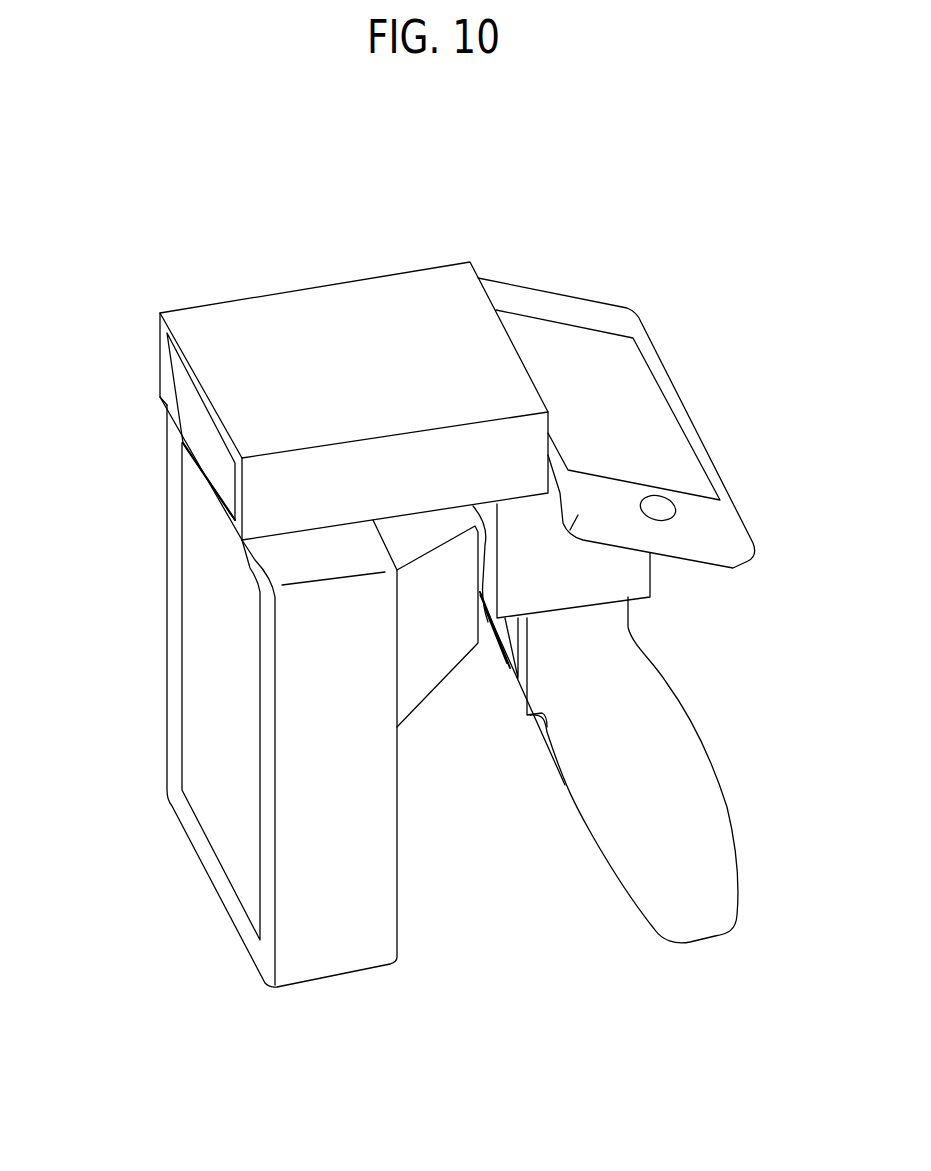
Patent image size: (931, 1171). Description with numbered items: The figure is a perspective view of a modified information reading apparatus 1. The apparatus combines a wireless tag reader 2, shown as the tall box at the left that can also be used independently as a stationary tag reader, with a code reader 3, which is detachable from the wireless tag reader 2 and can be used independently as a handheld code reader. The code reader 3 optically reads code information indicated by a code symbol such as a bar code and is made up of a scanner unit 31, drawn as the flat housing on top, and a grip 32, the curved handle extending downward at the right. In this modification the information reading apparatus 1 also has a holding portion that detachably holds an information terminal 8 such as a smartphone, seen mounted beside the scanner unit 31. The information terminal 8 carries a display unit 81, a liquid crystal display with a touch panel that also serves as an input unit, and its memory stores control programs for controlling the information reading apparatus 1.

The information reading apparatus 1 is at (288, 187).
The wireless tag reader 2 is at (150, 666).
The code reader 3 is at (708, 700).
The scanner unit 31 is at (235, 315).
The grip 32 is at (712, 826).
The information terminal 8 is at (690, 344).
The display unit 81 is at (670, 447).